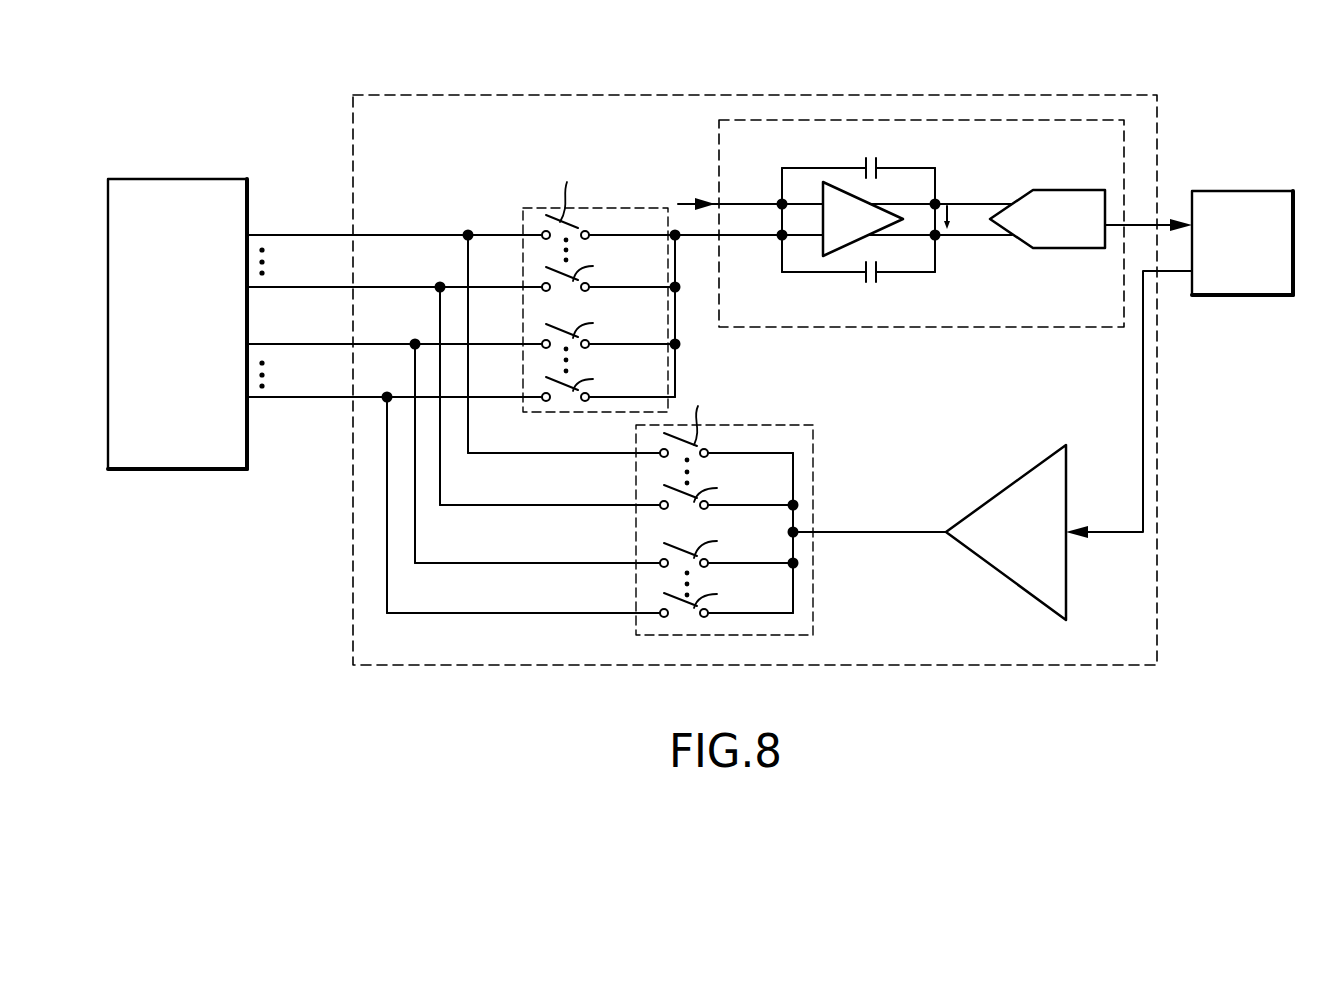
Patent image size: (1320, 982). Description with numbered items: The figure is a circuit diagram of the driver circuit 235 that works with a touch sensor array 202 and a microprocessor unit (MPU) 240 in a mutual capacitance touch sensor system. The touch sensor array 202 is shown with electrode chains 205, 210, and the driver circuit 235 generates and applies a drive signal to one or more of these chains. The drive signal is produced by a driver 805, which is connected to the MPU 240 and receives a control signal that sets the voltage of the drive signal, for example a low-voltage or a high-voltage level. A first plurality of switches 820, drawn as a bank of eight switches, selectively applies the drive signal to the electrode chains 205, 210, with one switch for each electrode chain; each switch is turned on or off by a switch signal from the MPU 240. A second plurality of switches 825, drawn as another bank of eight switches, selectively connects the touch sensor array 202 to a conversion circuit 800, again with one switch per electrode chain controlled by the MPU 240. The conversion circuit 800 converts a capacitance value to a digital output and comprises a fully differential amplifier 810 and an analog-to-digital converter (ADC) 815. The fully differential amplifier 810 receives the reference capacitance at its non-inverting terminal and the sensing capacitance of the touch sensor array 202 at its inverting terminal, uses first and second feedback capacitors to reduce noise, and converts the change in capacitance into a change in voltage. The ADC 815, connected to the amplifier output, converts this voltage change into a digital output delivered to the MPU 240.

The touch sensor array 202 is at (203, 179).
The electrode chain 205 is at (417, 362).
The electrode chain 210 is at (417, 471).
The driver circuit 235 is at (650, 95).
The microprocessor unit (MPU) 240 is at (1230, 190).
The conversion circuit 800 is at (888, 272).
The driver 805 is at (985, 562).
The fully differential amplifier 810 is at (830, 254).
The analog-to-digital converter (ADC) 815 is at (1047, 244).
The first plurality of switches 820 is at (813, 425).
The second plurality of switches 825 is at (543, 208).